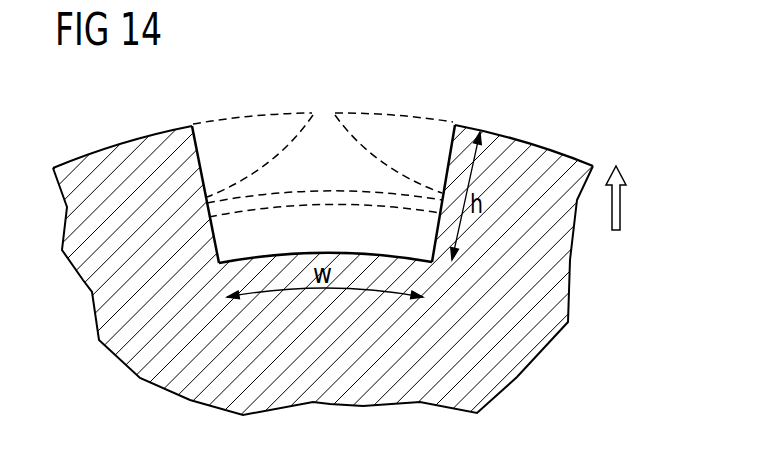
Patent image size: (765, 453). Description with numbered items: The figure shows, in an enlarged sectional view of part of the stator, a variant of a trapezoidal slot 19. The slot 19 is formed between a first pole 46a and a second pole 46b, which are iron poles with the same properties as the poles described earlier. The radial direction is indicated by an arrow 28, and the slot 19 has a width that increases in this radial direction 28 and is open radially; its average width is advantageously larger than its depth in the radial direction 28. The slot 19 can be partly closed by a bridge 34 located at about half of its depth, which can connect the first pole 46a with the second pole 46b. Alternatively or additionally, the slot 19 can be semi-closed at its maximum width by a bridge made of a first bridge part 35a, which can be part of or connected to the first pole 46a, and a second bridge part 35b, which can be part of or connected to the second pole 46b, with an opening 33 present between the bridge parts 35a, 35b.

The slot 19 is at (337, 176).
The radial direction 28 is at (621, 205).
The opening 33 is at (325, 120).
The bridge 34 is at (317, 197).
The first bridge part 35a is at (243, 132).
The second bridge part 35b is at (402, 132).
The first pole 46a is at (147, 170).
The second pole 46b is at (522, 167).